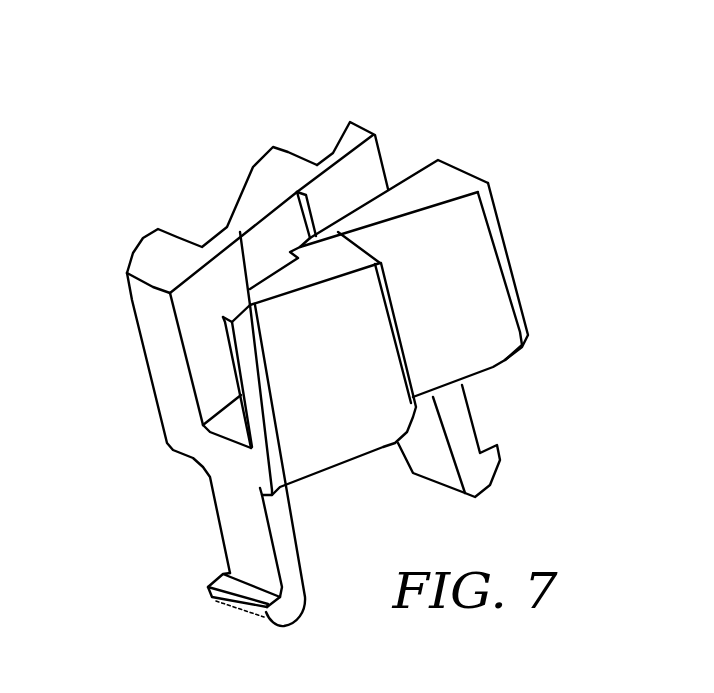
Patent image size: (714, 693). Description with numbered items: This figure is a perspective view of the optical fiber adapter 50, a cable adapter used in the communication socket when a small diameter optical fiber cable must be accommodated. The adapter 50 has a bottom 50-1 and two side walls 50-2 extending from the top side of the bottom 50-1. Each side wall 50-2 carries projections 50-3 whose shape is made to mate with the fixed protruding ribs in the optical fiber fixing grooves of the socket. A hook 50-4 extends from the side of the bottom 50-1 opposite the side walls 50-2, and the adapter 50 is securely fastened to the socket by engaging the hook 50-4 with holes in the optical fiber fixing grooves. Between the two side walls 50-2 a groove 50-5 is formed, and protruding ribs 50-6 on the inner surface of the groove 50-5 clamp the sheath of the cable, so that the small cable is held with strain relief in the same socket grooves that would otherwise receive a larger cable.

The optical fiber adapter 50 is at (122, 161).
The bottom 50-1 is at (230, 425).
The side wall 50-2 is at (279, 233).
The projections 50-3 is at (490, 186).
The hook 50-4 is at (290, 613).
The groove 50-5 is at (202, 303).
The protruding ribs 50-6 is at (322, 250).